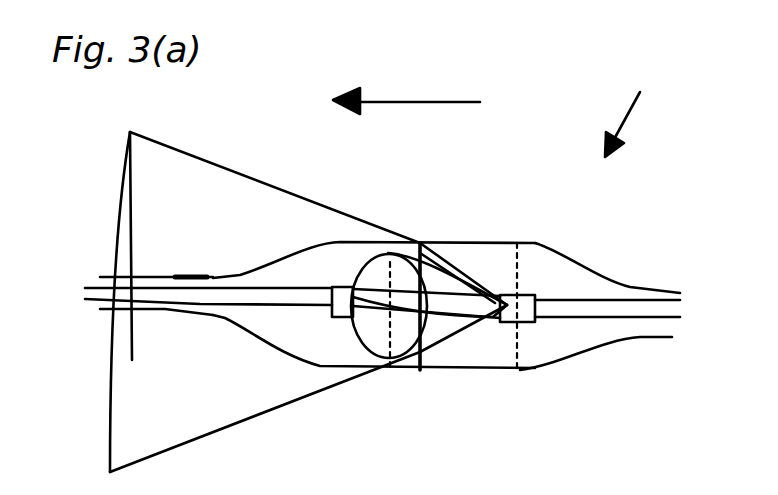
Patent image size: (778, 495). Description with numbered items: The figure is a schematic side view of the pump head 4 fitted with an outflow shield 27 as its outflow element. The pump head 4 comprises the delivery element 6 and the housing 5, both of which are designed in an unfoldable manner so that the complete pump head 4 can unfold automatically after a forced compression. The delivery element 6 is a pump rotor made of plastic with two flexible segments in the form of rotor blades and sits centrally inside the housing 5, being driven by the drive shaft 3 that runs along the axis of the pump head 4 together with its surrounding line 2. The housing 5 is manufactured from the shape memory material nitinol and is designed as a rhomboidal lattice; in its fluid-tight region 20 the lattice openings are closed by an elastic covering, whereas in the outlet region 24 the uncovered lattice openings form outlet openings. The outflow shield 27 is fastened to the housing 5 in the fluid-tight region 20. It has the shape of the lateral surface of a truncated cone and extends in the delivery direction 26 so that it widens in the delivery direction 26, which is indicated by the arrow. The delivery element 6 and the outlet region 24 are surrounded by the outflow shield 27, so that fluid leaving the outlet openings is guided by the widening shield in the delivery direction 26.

The optical fibre 2 is at (155, 313).
The drive shaft 3 is at (193, 317).
The pump head 4 is at (630, 107).
The housing 5 is at (617, 280).
The delivery element 6 is at (433, 347).
The fluid-tight region 20 is at (493, 360).
The outlet region 24 is at (258, 333).
The delivery direction 26 is at (425, 100).
The outflow shield 27 is at (350, 225).